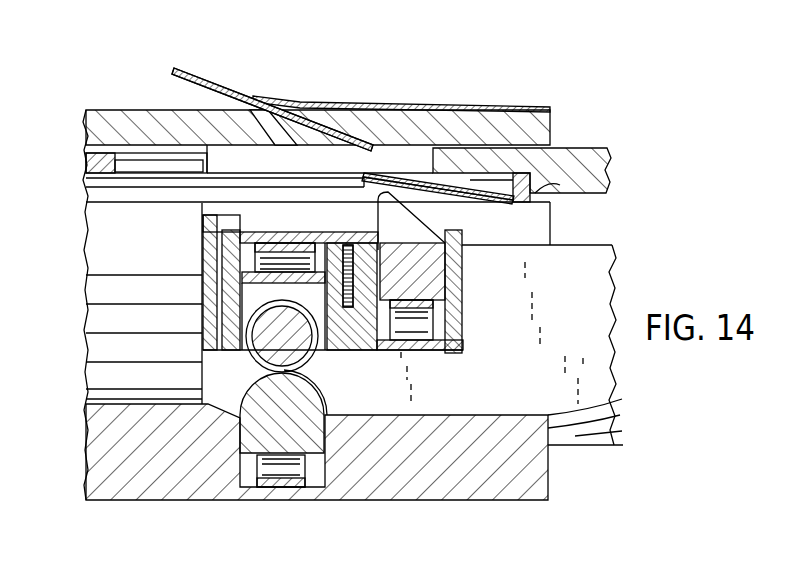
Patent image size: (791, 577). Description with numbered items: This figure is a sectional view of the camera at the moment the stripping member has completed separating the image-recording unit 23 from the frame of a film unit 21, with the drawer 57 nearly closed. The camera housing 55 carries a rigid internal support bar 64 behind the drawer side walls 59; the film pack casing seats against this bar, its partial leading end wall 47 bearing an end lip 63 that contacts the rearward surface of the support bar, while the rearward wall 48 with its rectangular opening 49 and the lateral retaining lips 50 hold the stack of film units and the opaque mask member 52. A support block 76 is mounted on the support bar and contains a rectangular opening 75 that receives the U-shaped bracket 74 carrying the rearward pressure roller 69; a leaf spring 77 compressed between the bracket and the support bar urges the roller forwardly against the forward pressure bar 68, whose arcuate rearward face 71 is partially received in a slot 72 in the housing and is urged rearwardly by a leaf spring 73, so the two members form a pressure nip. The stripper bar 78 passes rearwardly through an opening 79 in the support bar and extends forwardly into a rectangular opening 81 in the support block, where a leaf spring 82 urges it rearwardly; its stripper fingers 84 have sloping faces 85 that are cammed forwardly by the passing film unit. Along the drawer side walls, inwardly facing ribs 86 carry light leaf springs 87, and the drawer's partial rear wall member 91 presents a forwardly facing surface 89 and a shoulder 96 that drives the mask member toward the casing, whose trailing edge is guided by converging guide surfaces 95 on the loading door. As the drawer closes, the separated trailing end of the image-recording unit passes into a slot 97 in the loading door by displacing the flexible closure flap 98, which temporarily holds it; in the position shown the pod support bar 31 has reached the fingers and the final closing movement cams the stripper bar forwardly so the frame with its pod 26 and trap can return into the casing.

The film unit 21 is at (90, 318).
The image-recording unit 23 is at (204, 78).
The pod 26 is at (380, 178).
The pod support bar 31 is at (518, 203).
The partial leading end wall 47 is at (205, 253).
The rearward wall 48 is at (86, 170).
The rectangular opening 49 is at (127, 165).
The lateral retaining lips 50 is at (100, 394).
The mask member 52 is at (93, 288).
The camera housing 55 is at (507, 500).
The drawer 57 is at (578, 452).
The drawer side walls 59 is at (593, 313).
The end lip 63 is at (225, 220).
The support bar 64 is at (127, 118).
The forward pressure bar 68 is at (310, 435).
The rearward pressure roller 69 is at (317, 372).
The arcuate rearward face 71 is at (313, 380).
The slot 72 is at (245, 478).
The leaf spring 73 is at (282, 470).
The U-shaped bracket 74 is at (327, 355).
The rectangular opening 75 is at (243, 350).
The support block 76 is at (433, 353).
The leaf spring 77 is at (297, 260).
The stripper bar 78 is at (433, 267).
The opening 79 is at (448, 236).
The rectangular opening 81 is at (443, 333).
The leaf spring 82 is at (420, 320).
The stripper fingers 84 is at (392, 217).
The sloping faces 85 is at (432, 220).
The ribs 86 is at (620, 433).
The leaf spring 87 is at (575, 390).
The forwardly facing surface 89 is at (424, 182).
The rear wall member 91 is at (578, 155).
The guide surfaces 95 is at (394, 147).
The shoulder 96 is at (565, 195).
The slot 97 is at (344, 127).
The closure flap 98 is at (297, 103).